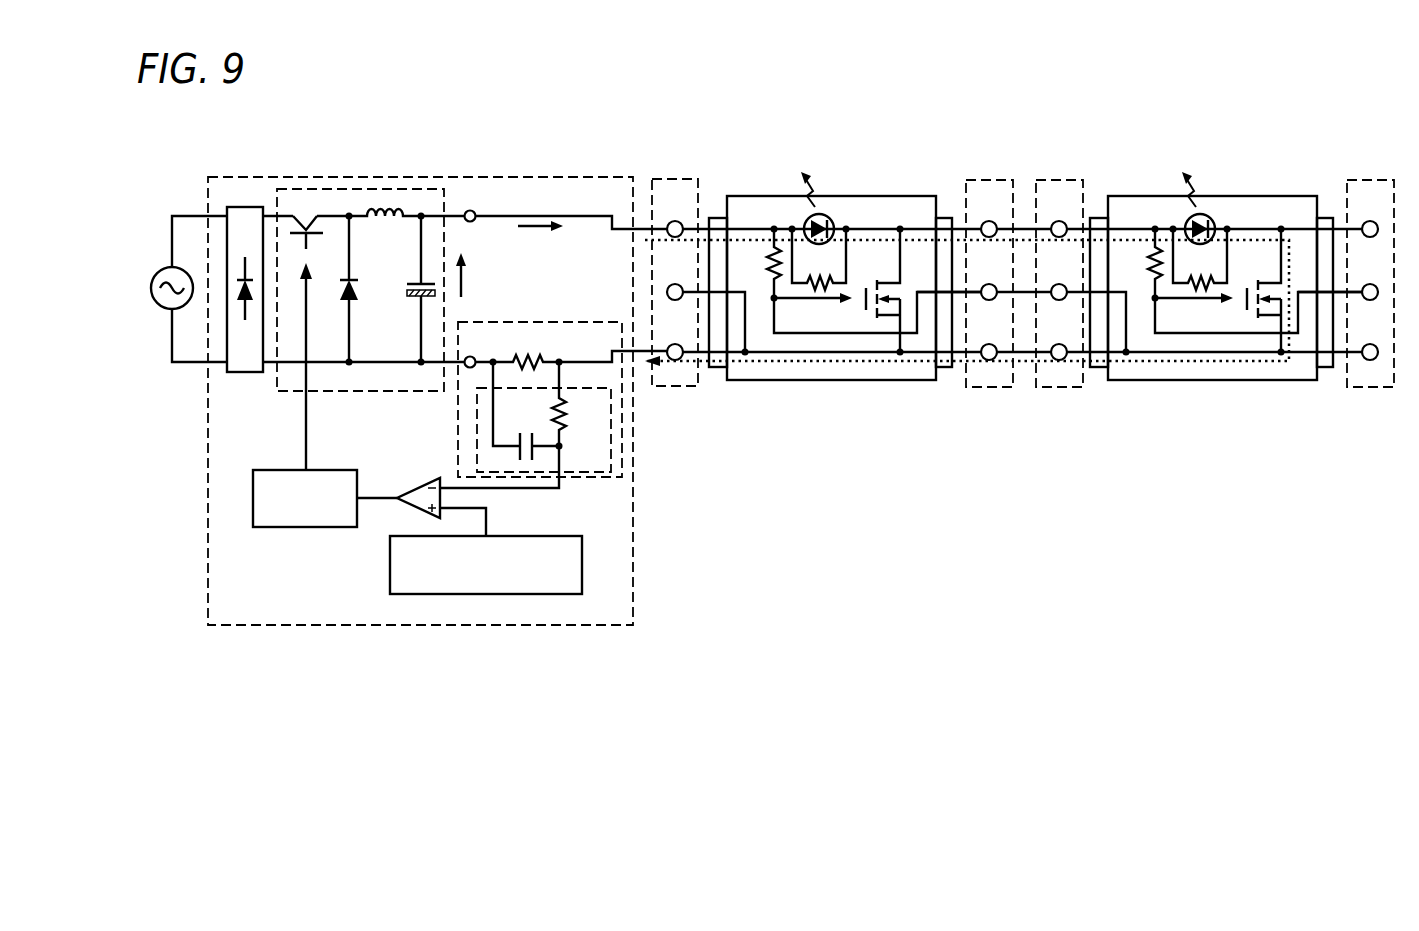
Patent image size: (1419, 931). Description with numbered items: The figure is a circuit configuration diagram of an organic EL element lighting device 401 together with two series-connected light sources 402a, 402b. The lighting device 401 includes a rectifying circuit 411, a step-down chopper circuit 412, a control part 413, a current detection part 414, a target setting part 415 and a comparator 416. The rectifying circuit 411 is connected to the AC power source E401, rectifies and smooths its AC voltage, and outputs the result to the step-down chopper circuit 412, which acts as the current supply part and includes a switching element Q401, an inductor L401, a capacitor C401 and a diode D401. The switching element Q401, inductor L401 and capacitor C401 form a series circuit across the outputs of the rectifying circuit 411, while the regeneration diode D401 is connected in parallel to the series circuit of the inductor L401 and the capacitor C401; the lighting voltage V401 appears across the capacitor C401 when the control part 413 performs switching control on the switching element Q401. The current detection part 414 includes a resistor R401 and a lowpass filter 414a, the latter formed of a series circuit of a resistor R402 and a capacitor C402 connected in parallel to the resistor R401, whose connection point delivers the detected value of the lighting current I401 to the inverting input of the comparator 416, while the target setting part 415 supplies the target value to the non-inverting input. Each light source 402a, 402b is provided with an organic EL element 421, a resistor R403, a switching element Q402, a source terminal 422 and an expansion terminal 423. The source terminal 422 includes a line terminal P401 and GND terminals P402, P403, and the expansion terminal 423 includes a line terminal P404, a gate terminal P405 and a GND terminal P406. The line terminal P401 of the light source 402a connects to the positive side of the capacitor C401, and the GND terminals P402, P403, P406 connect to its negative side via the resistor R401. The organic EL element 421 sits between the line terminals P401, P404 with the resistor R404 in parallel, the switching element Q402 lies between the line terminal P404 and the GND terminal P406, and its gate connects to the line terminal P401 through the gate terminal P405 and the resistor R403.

The organic EL element lighting device 401 is at (567, 177).
The rectifying circuit 411 is at (249, 210).
The step-down chopper circuit 412 is at (384, 188).
The control part 413 is at (294, 526).
The current detection part 414 is at (580, 321).
The lowpass filter 414a is at (584, 478).
The target setting part 415 is at (582, 575).
The comparator 416 is at (418, 485).
The organic EL element 421 is at (824, 214).
The source terminal 422 is at (680, 178).
The expansion terminal 423 is at (993, 180).
The light source 402a is at (759, 195).
The light source 402b is at (1142, 195).
The AC power source E401 is at (181, 289).
The switching element Q401 is at (317, 239).
The inductor L401 is at (385, 230).
The diode D401 is at (363, 289).
The capacitor C401 is at (405, 289).
The lighting voltage V401 is at (477, 275).
The lighting current I401 is at (540, 242).
The resistor R401 is at (526, 349).
The capacitor C402 is at (526, 411).
The resistor R402 is at (575, 406).
The resistor R403 is at (948, 263).
The resistor R404 is at (1009, 259).
The switching element Q402 is at (1027, 290).
The line terminal P401 is at (867, 214).
The GND terminal P402 is at (867, 276).
The GND terminal P403 is at (867, 337).
The line terminal P404 is at (1180, 214).
The gate terminal P405 is at (1180, 277).
The GND terminal P406 is at (1180, 337).